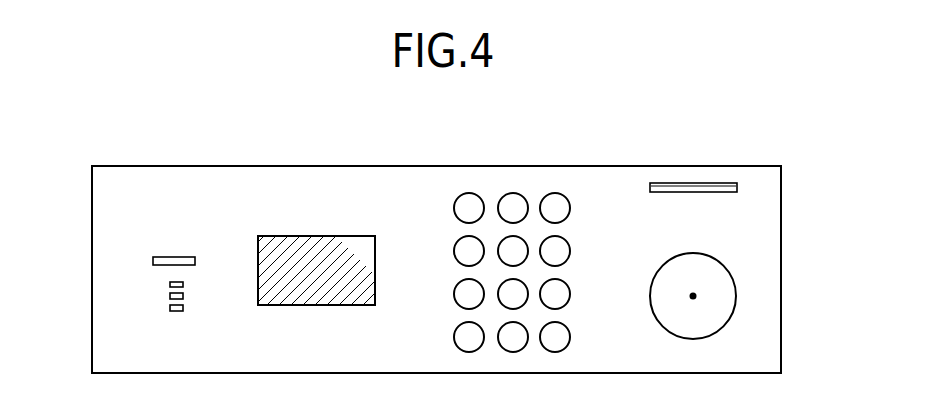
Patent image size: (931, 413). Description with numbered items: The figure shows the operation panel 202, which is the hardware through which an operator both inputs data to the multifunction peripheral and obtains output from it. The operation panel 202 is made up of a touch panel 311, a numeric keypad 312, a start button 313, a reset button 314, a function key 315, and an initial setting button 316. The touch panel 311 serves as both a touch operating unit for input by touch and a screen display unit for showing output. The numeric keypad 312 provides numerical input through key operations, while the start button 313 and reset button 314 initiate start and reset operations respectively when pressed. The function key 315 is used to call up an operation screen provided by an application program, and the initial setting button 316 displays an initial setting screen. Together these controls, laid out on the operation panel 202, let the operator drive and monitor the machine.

The operation panel 202 is at (117, 152).
The touch panel 311 is at (318, 235).
The numeric keypad 312 is at (513, 192).
The start button 313 is at (736, 296).
The reset button 314 is at (737, 189).
The function key 315 is at (167, 296).
The initial setting button 316 is at (153, 259).